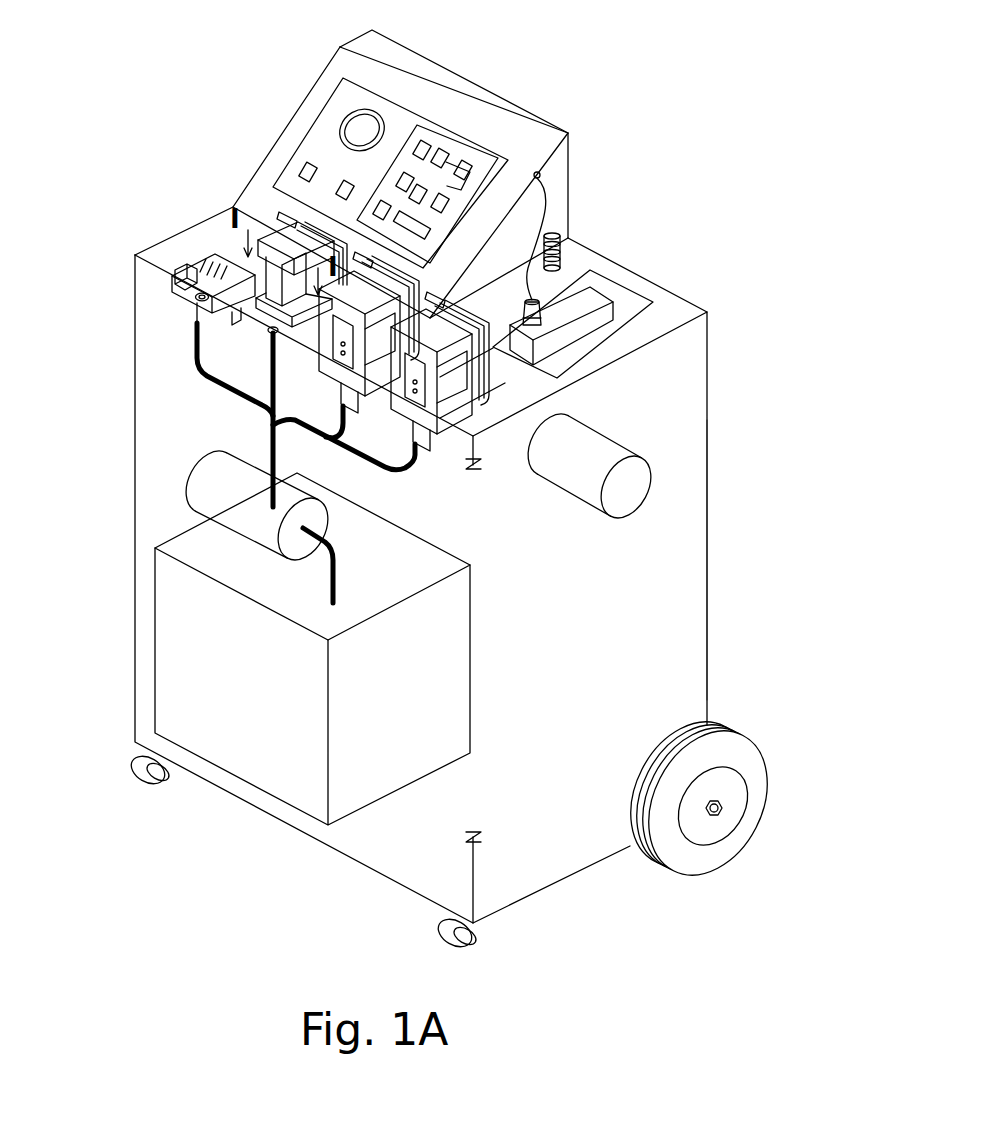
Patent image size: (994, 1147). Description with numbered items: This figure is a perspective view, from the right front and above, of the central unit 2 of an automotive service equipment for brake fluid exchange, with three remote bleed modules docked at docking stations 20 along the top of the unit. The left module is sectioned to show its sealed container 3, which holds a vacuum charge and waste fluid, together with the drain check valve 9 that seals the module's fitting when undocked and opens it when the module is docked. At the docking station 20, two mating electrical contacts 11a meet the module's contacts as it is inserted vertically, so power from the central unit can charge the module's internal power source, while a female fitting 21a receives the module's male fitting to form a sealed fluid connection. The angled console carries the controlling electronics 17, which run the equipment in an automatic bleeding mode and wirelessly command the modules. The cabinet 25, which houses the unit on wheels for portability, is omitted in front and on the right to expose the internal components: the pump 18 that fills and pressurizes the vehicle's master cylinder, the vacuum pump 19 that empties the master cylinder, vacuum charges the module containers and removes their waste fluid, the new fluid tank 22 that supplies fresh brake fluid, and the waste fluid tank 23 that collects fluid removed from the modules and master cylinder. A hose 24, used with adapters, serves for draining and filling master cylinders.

The central unit 2 is at (265, 845).
The sealed container 3 is at (238, 268).
The check valve 9 is at (258, 340).
The mating electrical contacts 11a is at (216, 254).
The controlling electronics 17 is at (400, 118).
The pump 18 is at (627, 476).
The vacuum pump 19 is at (200, 484).
The docking station 20 is at (177, 281).
The female fitting 21a is at (190, 299).
The new fluid tank/container 22 is at (602, 298).
The waste fluid tank/container 23 is at (195, 623).
The hose 24 is at (567, 242).
The cabinet/enclosure 25 is at (688, 632).